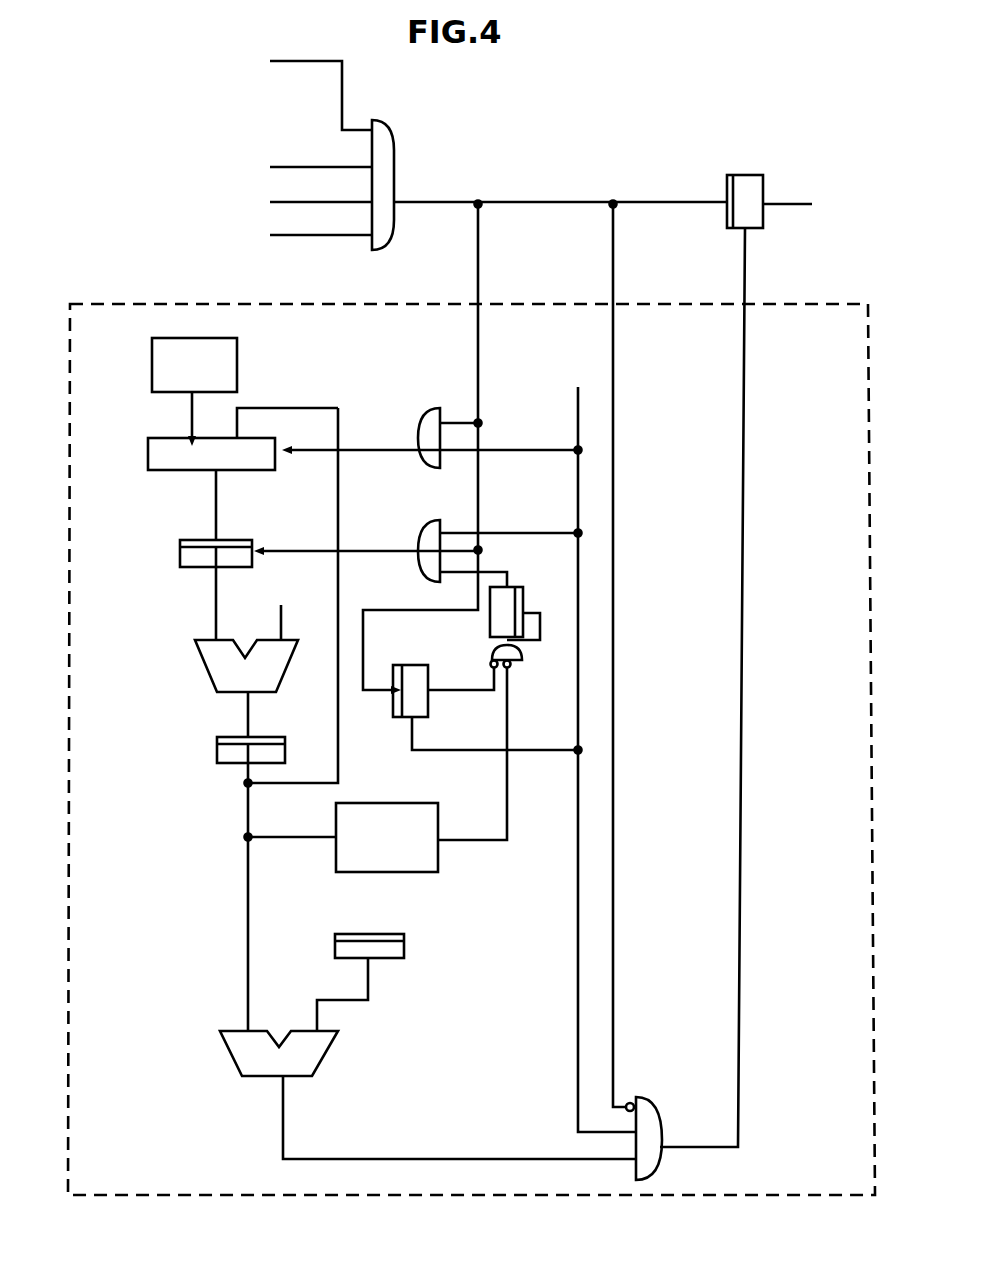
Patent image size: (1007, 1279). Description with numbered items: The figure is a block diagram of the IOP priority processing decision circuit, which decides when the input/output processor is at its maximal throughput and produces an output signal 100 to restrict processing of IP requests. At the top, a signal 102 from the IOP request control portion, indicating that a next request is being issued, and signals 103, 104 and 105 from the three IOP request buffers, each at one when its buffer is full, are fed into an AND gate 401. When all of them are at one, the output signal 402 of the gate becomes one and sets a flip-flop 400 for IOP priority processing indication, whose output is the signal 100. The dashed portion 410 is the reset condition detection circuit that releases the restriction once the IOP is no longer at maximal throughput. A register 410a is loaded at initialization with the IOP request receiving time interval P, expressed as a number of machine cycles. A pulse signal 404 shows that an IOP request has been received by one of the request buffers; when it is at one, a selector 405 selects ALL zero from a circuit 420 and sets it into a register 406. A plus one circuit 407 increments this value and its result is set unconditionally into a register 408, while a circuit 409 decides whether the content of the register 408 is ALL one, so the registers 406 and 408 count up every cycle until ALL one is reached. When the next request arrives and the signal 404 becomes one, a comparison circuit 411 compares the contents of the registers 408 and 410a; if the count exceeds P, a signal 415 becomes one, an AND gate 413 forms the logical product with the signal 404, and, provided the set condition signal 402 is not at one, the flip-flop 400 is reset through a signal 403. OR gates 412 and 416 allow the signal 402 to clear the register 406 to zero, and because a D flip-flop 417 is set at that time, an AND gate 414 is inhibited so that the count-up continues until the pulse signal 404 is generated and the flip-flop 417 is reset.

The output signal 100 is at (815, 204).
The signal from IOP request control portion 102 is at (290, 88).
The signal from IOP request buffer 103 is at (290, 168).
The signal from IOP request buffer 104 is at (290, 203).
The signal from IOP request buffer 105 is at (290, 236).
The flip-flop for IOP priority processing indication 400 is at (757, 175).
The AND gate 401 is at (396, 133).
The output signal of AND gate 402 is at (476, 202).
The reset signal 403 is at (746, 428).
The pulse signal 404 is at (590, 742).
The selector 405 is at (195, 470).
The register 406 is at (180, 568).
The plus 1 circuit 407 is at (208, 675).
The register 408 is at (217, 760).
The ALL 1 decision circuit 409 is at (433, 874).
The reset condition detection circuit 410 is at (838, 306).
The register 410a is at (404, 955).
The comparison circuit 411 is at (222, 1062).
The OR gate 412 is at (425, 523).
The AND gate 413 is at (656, 1113).
The AND gate 414 is at (512, 667).
The comparison result signal 415 is at (405, 1158).
The OR gate 416 is at (432, 410).
The D flip-flop 417 is at (403, 718).
The ALL 0 circuit 420 is at (185, 338).